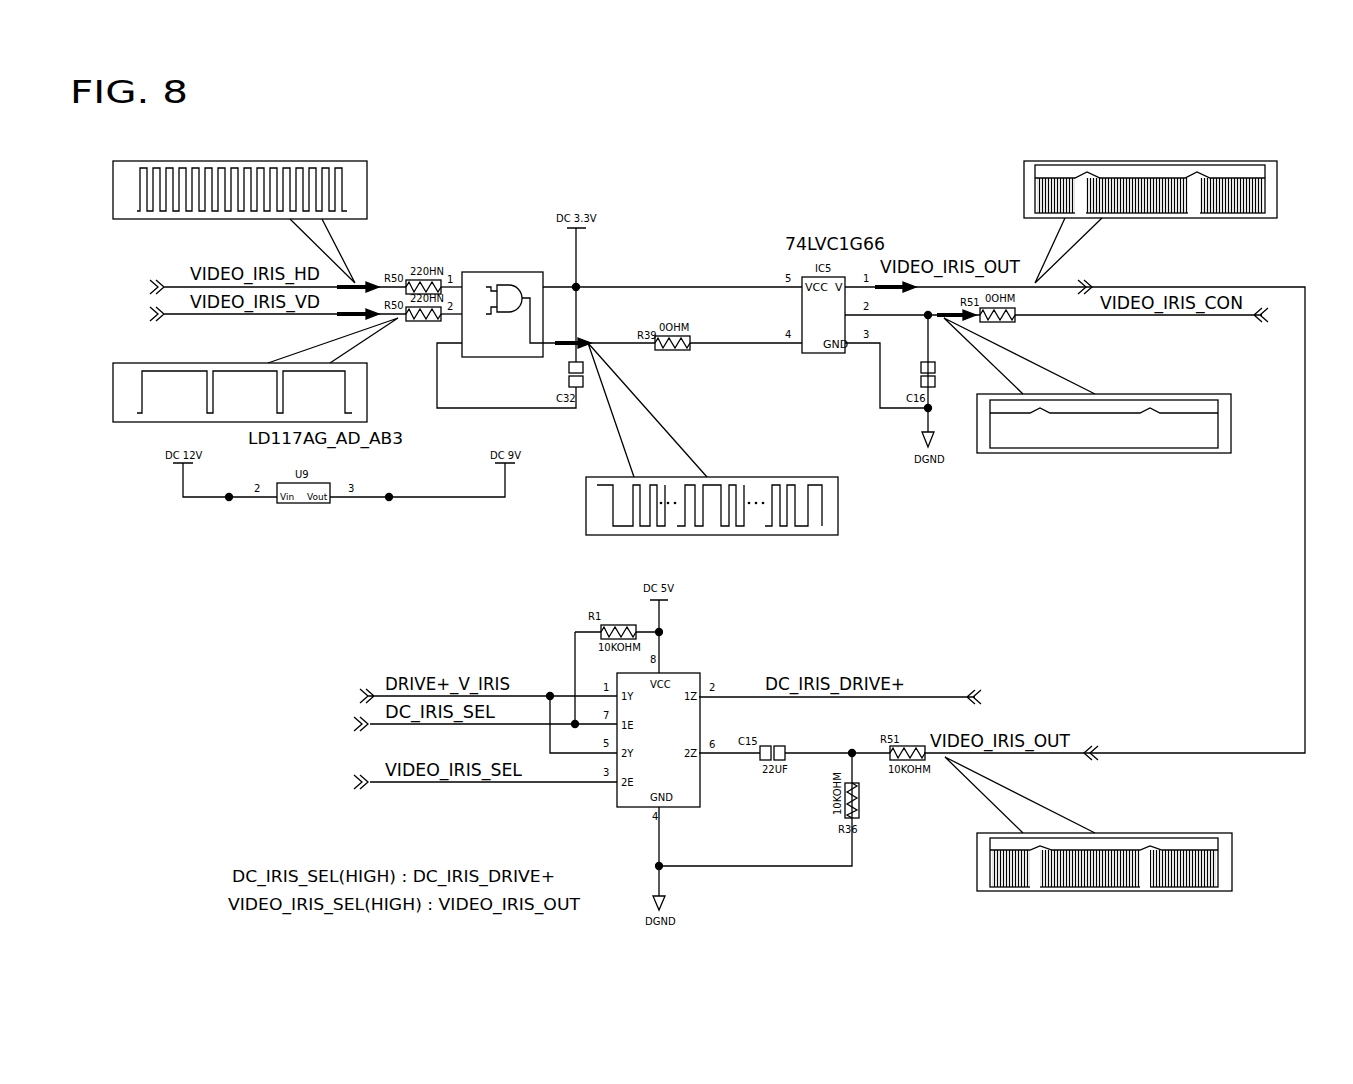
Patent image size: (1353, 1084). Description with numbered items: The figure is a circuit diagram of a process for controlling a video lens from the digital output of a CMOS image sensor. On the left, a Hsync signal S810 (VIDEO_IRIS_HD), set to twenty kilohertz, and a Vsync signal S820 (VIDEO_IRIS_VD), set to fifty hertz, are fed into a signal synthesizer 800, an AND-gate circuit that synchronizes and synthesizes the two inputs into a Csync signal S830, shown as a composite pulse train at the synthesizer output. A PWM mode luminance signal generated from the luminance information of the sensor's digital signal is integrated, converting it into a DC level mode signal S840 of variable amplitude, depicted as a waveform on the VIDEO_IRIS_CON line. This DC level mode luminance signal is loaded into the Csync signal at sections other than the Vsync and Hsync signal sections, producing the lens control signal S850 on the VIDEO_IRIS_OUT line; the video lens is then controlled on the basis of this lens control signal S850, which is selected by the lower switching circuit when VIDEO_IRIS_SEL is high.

The signal synthesizer 800 is at (502, 357).
The Hsync signal S810 is at (246, 161).
The Vsync signal S820 is at (248, 363).
The Csync signal S830 is at (780, 477).
The DC level mode signal S840 is at (1152, 394).
The lens control signal S850 is at (1200, 161).